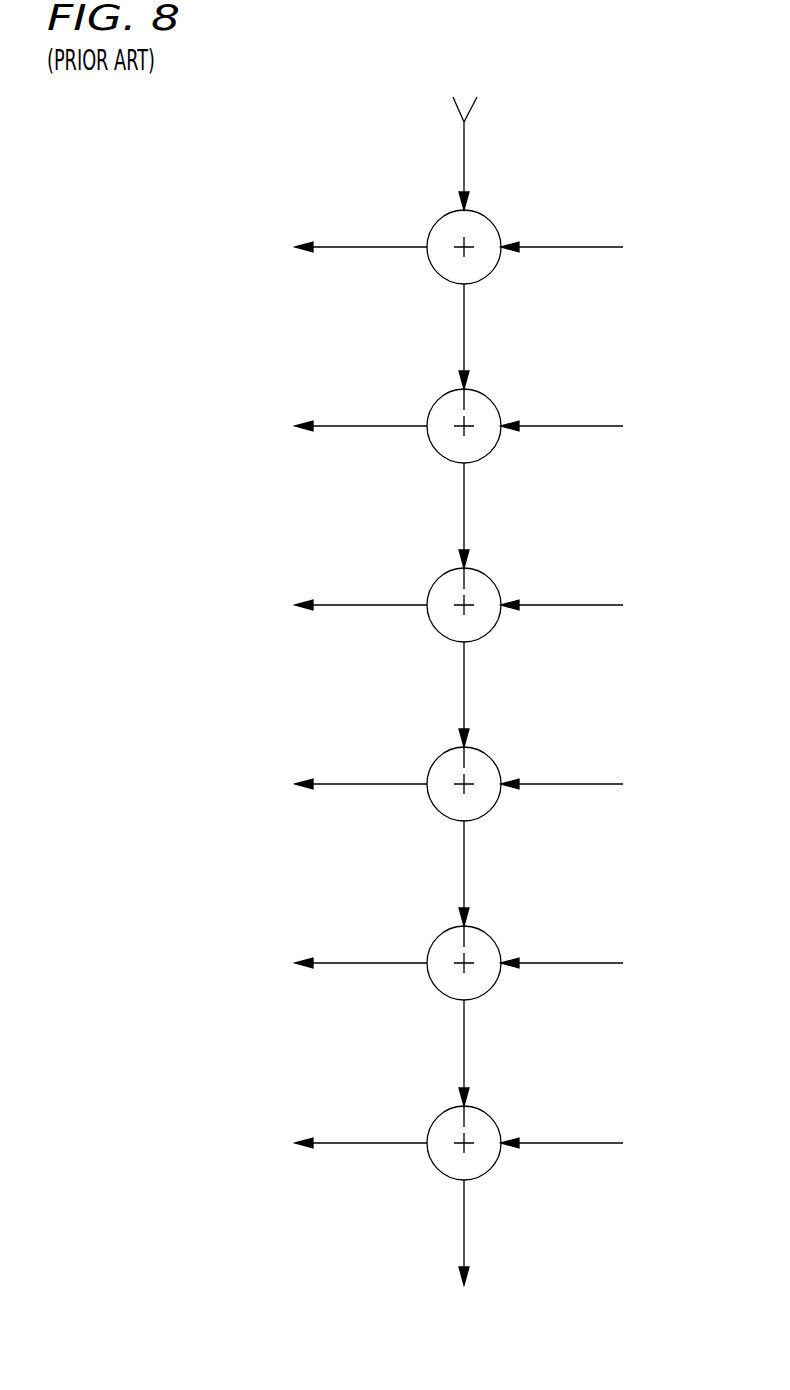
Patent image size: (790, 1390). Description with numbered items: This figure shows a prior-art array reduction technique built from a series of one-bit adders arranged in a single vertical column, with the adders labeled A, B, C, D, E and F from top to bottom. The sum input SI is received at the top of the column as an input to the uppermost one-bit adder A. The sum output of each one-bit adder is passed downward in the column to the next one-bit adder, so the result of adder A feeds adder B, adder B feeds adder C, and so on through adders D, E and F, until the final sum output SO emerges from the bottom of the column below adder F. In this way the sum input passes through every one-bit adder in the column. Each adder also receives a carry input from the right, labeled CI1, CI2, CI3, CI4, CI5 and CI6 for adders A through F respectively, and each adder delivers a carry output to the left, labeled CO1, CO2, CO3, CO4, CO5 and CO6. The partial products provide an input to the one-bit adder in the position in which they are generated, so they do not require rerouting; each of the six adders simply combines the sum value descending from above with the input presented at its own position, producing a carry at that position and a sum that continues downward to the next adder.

The first full adder A is at (494, 218).
The second full adder B is at (494, 397).
The third full adder C is at (494, 576).
The fourth full adder D is at (494, 755).
The fifth full adder E is at (494, 934).
The sixth full adder F is at (494, 1114).
The sum input SI is at (464, 134).
The sum output SO is at (464, 1300).
The carry output 1 CO1 is at (339, 245).
The carry output 2 CO2 is at (339, 425).
The carry output 3 CO3 is at (339, 604).
The carry output 4 CO4 is at (339, 783).
The carry output 5 CO5 is at (339, 962).
The carry output 6 CO6 is at (339, 1142).
The carry input 1 CI1 is at (585, 253).
The carry input 2 CI2 is at (586, 433).
The carry input 3 CI3 is at (586, 612).
The carry input 4 CI4 is at (586, 791).
The carry input 5 CI5 is at (586, 970).
The carry input 6 CI6 is at (586, 1150).